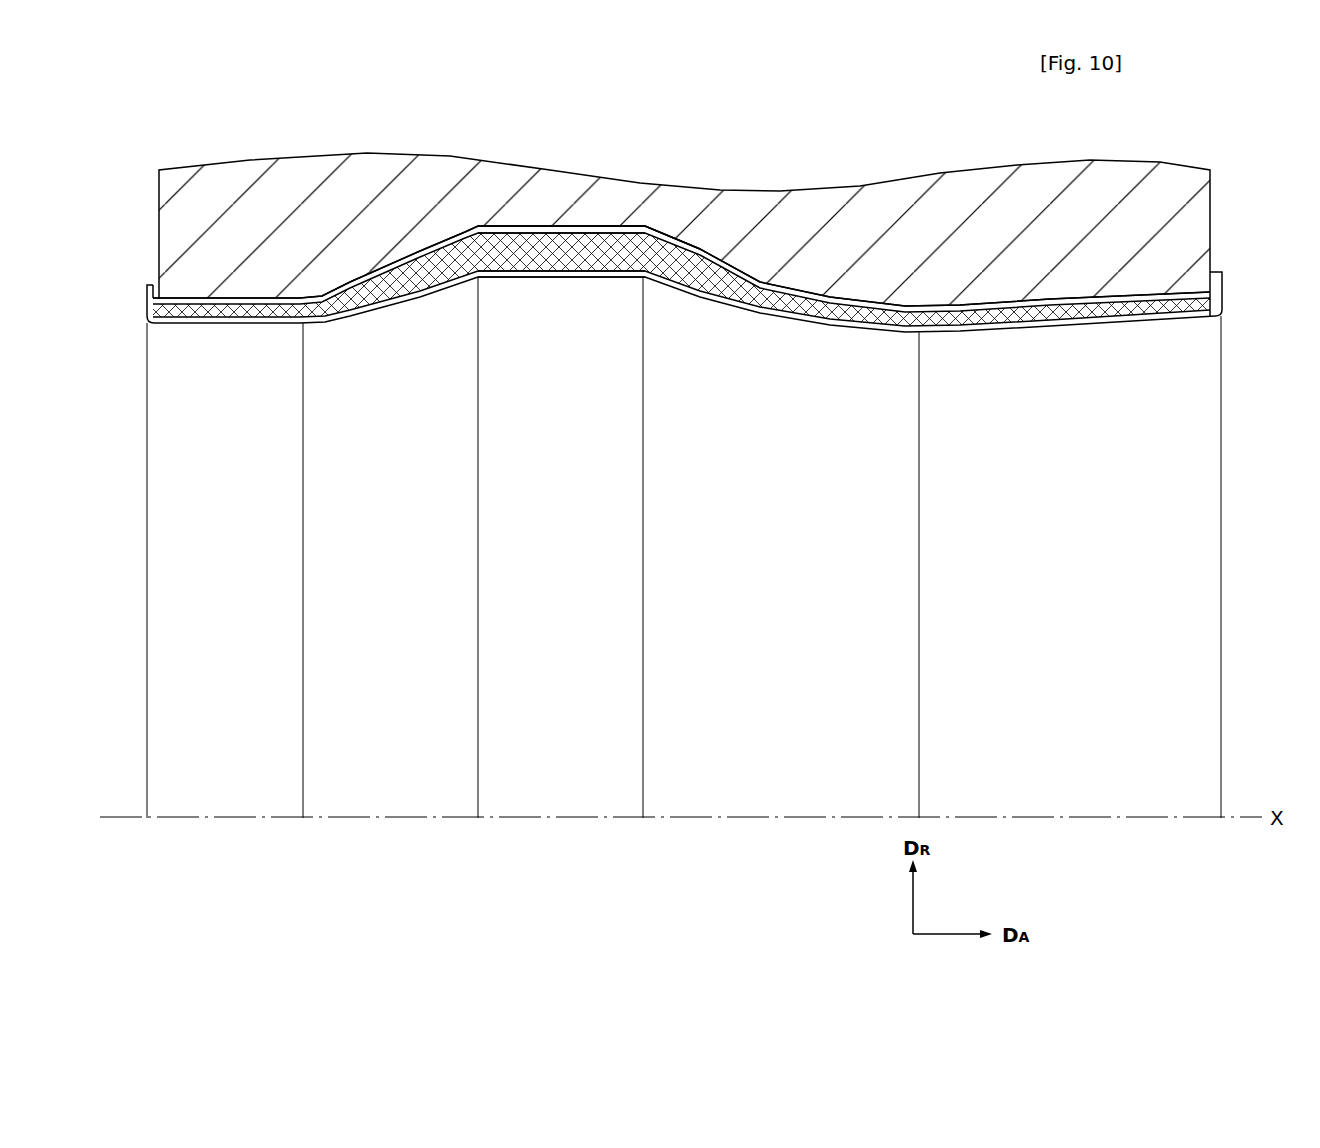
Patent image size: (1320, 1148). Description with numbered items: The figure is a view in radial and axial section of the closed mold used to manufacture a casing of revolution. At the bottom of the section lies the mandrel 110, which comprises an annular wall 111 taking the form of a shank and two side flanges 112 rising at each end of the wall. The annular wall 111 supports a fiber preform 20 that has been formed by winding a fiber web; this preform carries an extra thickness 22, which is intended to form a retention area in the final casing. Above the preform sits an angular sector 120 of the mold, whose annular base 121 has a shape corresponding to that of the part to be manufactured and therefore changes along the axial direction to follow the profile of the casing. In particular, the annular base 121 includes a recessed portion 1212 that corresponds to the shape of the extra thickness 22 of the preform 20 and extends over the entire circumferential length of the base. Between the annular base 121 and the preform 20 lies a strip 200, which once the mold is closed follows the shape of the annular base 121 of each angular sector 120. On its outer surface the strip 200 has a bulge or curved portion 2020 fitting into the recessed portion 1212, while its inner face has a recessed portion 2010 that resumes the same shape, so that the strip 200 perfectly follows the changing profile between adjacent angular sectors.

The mandrel 110 is at (702, 311).
The annular wall 111 is at (1105, 323).
The side flanges 112 is at (146, 302).
The angular sector 120 is at (1213, 212).
The annular base 121 is at (807, 291).
The strip 200 is at (701, 250).
The recessed portion 2010 is at (571, 278).
The bulge portion 2020 is at (583, 224).
The recessed portion 1212 is at (647, 224).
The fiber preform 20 is at (416, 268).
The extra thickness 22 is at (540, 229).